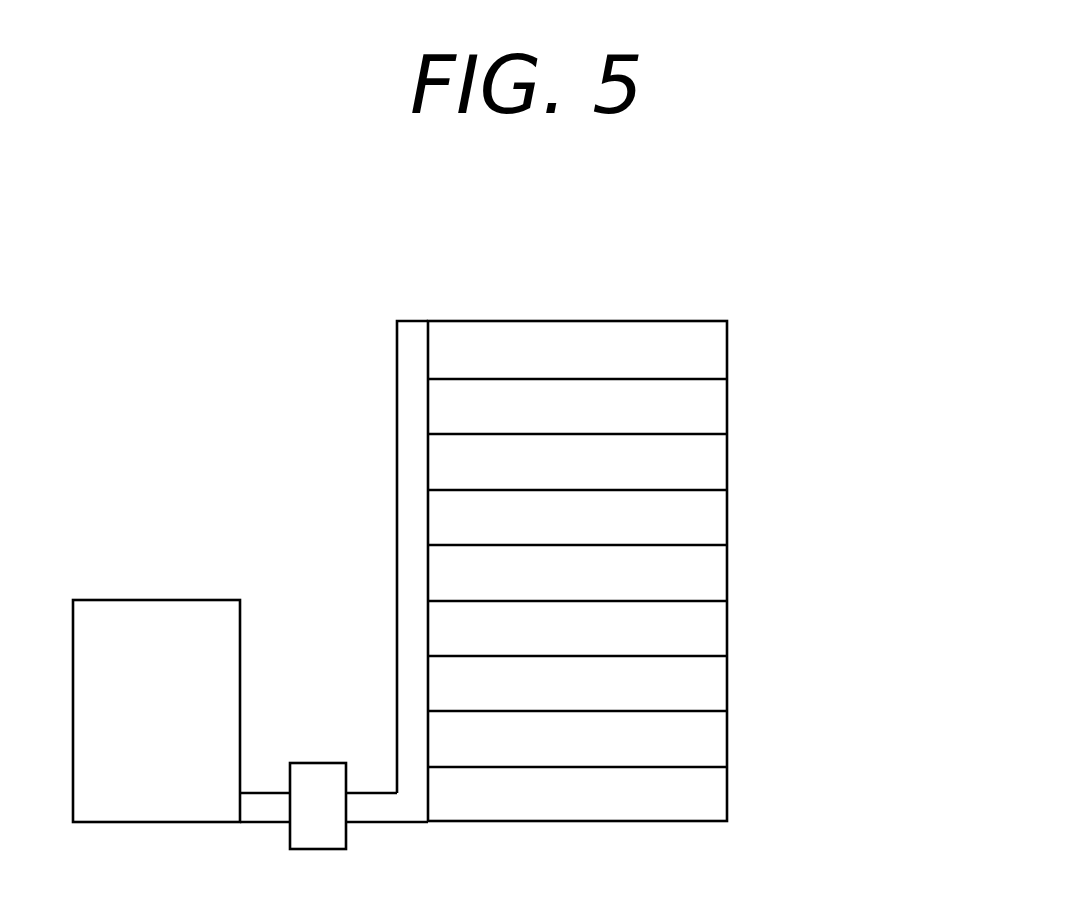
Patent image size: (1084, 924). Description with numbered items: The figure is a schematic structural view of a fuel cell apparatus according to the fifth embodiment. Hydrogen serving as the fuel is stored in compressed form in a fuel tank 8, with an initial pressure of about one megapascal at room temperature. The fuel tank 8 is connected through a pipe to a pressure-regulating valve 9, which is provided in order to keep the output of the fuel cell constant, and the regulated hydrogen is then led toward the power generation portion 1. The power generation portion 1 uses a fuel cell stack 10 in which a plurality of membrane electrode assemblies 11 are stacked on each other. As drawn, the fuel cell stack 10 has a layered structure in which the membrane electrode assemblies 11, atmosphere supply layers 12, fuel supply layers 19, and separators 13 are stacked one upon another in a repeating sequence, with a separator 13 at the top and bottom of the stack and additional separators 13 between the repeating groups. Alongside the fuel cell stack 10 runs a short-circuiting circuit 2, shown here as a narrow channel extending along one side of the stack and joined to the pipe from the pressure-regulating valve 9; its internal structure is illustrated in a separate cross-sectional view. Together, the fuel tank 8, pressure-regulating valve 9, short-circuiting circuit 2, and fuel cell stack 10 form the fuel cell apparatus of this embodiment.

The power generation portion 1 is at (546, 259).
The short-circuiting circuit 2 is at (415, 528).
The fuel tank 8 is at (156, 608).
The pressure-regulating valve 9 is at (318, 763).
The fuel cell stack 10 is at (857, 805).
The membrane electrode assembly 11 is at (715, 463).
The atmosphere supply layer 12 is at (715, 409).
The separator 13 is at (715, 352).
The fuel supply layer 19 is at (715, 518).